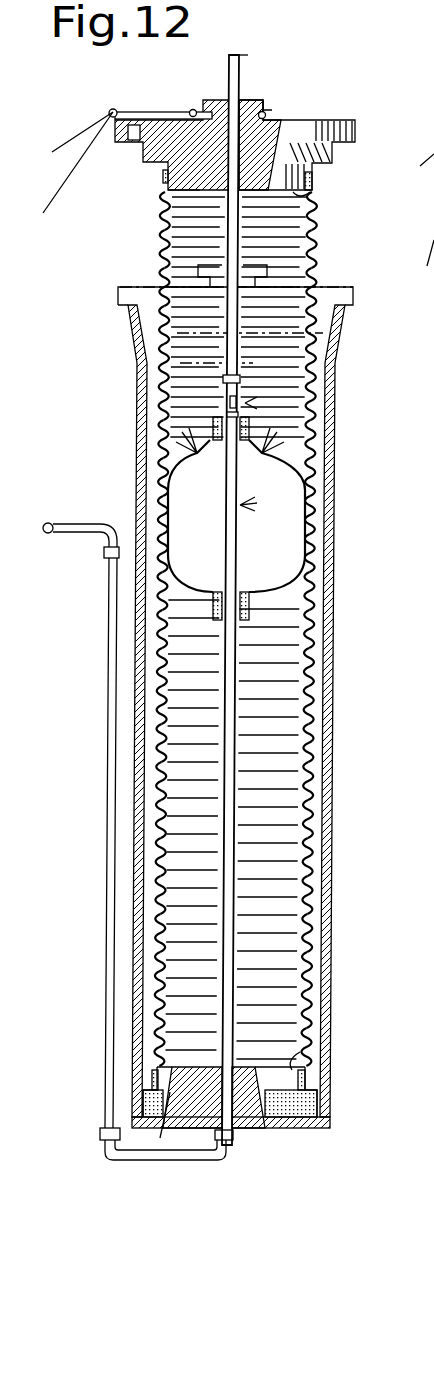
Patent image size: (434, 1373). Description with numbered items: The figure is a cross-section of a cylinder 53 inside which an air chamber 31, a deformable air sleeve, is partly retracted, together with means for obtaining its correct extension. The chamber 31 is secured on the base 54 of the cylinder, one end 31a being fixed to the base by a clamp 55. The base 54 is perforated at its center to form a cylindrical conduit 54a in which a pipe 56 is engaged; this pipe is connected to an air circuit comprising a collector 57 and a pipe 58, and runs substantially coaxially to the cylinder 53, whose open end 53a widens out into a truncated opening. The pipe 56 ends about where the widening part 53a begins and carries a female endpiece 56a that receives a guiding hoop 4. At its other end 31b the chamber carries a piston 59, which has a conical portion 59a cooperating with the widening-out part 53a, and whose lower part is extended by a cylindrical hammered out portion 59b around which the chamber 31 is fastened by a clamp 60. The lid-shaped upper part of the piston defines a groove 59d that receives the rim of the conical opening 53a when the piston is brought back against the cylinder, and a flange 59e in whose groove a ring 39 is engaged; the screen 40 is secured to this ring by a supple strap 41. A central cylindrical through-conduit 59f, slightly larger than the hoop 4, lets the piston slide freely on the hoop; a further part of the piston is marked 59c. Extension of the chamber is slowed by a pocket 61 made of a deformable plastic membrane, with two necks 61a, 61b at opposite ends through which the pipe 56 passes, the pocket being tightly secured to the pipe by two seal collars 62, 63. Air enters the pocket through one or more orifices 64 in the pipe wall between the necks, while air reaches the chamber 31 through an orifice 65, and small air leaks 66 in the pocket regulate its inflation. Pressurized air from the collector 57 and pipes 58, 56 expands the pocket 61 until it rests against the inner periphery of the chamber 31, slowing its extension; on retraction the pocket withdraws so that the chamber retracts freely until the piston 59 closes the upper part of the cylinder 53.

The guiding hoop 4 is at (227, 243).
The air chamber 31 is at (317, 420).
The end of the air chamber 31a is at (292, 1060).
The other end of the air chamber 31b is at (293, 200).
The ring 39 is at (190, 110).
The screen 40 is at (55, 150).
The supple strap 41 is at (152, 110).
The cylinder 53 is at (331, 778).
The open end of the cylinder 53a is at (335, 331).
The base 54 is at (255, 1115).
The cylindrical conduit 54a is at (247, 1117).
The clamp 55 is at (308, 1078).
The pipe 56 is at (227, 873).
The female endpiece 56a is at (240, 380).
The collector 57 is at (48, 523).
The pipe 58 is at (108, 863).
The piston 59 is at (315, 122).
The conical portion 59a is at (178, 185).
The cylindrical hammered out portion 59b is at (173, 193).
The cap terminal 59c is at (122, 97).
The groove 59d is at (137, 140).
The flange 59e is at (260, 110).
The cylindrical through-conduit 59f is at (281, 128).
The clamp 60 is at (308, 177).
The pocket 61 is at (283, 507).
The neck 61a is at (227, 412).
The neck 61b is at (249, 603).
The seal collar 62 is at (213, 425).
The seal collar 63 is at (213, 610).
The orifice 64 is at (233, 512).
The orifice 65 is at (247, 403).
The air leaks 66 is at (200, 455).